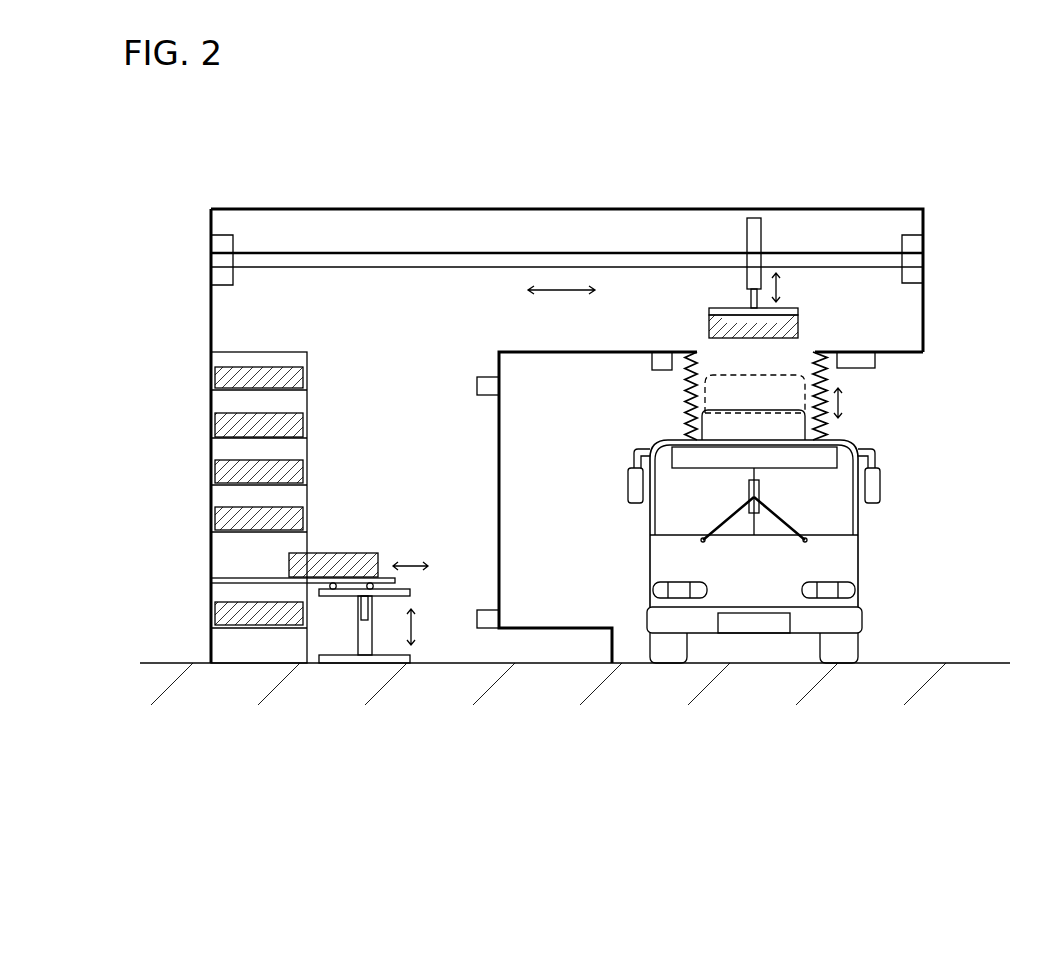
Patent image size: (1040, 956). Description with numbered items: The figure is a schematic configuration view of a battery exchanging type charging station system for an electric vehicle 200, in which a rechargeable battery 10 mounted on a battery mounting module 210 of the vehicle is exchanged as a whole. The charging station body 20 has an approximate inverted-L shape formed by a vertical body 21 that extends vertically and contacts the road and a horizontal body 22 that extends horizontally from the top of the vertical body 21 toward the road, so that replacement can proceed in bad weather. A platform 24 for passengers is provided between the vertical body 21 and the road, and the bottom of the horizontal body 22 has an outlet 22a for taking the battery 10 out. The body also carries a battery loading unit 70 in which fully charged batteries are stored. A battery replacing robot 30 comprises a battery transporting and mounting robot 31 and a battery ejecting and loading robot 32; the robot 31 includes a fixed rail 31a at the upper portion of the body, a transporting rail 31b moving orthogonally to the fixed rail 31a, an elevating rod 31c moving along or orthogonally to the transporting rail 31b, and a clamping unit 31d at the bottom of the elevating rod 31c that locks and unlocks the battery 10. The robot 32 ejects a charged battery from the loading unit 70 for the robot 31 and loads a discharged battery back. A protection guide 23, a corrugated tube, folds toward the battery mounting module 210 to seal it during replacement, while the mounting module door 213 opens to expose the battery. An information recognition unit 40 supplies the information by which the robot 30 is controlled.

The rechargeable battery 10 is at (214, 468).
The charging station body 20 is at (187, 139).
The vertical body 21 is at (210, 295).
The horizontal body 22 is at (211, 209).
The outlet 22a is at (807, 347).
The protection guide 23 is at (690, 432).
The platform 24 is at (587, 653).
The battery replacing robot 30 is at (780, 68).
The battery transporting and mounting robot 31 is at (872, 118).
The fixed rail 31a is at (902, 243).
The transporting rail 31b is at (808, 262).
The elevating rod 31c is at (752, 242).
The clamping unit 31d is at (710, 308).
The battery ejecting and loading robot 32 is at (387, 557).
The information recognition unit 40 is at (652, 358).
The battery loading unit 70 is at (272, 352).
The electric vehicle 200 is at (863, 573).
The battery mounting module 210 is at (797, 432).
The mounting module door 213 is at (690, 403).